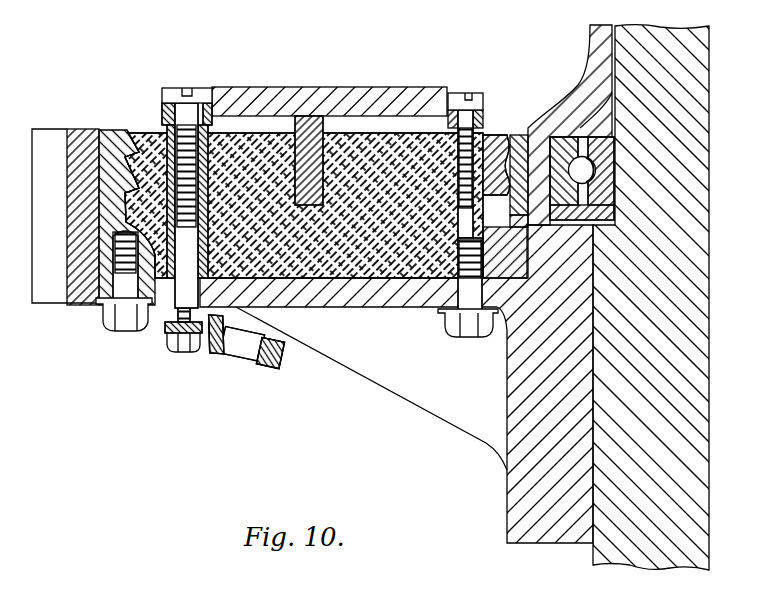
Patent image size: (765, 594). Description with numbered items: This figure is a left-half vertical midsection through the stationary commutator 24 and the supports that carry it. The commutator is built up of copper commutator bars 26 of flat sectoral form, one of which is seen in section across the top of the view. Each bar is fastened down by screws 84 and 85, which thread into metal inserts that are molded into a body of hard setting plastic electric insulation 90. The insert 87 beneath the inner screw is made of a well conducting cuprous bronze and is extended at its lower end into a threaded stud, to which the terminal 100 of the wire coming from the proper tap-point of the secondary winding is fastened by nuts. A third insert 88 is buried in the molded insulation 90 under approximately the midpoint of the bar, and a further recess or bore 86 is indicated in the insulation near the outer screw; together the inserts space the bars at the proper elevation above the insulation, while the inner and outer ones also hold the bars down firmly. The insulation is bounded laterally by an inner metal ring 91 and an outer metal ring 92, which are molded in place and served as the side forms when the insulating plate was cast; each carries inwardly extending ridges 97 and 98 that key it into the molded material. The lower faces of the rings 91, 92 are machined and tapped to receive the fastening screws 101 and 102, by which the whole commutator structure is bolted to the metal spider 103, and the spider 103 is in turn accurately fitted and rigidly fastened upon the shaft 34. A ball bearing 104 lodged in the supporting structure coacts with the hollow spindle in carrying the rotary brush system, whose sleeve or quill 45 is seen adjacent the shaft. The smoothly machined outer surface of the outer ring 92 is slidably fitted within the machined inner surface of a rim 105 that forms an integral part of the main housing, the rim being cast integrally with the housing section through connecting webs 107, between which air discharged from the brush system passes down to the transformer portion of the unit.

The stationary commutator 24 is at (265, 297).
The commutator bars 26 is at (292, 116).
The shaft 34 is at (681, 381).
The sleeve or quill 45 is at (560, 97).
The screw 84 is at (470, 92).
The screw 85 is at (172, 88).
The bore 86 is at (447, 163).
The insert 87 is at (223, 136).
The third insert 88 is at (310, 136).
The plastic electric insulation 90 is at (347, 243).
The inner metal ring 91 is at (520, 137).
The outer metal ring 92 is at (116, 136).
The inwardly extending ridge 97 is at (493, 137).
The inwardly extending ridges 98 is at (128, 157).
The terminal 100 is at (236, 352).
The fastening screw 101 is at (468, 337).
The fastening screw 102 is at (100, 318).
The metal spider 103 is at (378, 300).
The ball bearing 104 is at (594, 172).
The rim 105 is at (70, 290).
The connecting webs 107 is at (48, 126).